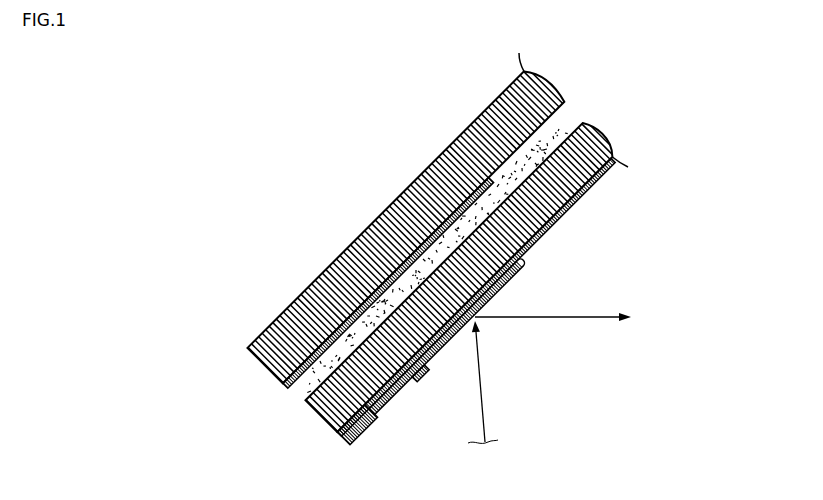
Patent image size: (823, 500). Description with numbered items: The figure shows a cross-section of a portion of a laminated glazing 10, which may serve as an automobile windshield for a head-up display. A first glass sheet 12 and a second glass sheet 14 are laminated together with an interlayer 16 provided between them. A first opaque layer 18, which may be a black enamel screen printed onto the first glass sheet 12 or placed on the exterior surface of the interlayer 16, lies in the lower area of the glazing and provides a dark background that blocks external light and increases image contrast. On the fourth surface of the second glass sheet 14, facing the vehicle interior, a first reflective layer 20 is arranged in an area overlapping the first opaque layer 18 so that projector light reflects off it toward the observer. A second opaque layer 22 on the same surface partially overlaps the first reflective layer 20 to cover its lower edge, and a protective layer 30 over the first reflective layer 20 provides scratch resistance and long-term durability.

The laminated glazing 10 is at (477, 267).
The first glass sheet 12 is at (440, 178).
The second glass sheet 14 is at (568, 173).
The interlayer 16 is at (558, 122).
The first opaque layer 18 is at (388, 277).
The first reflective layer 20 is at (419, 382).
The second opaque layer 22 is at (373, 417).
The protective layer 30 is at (508, 290).